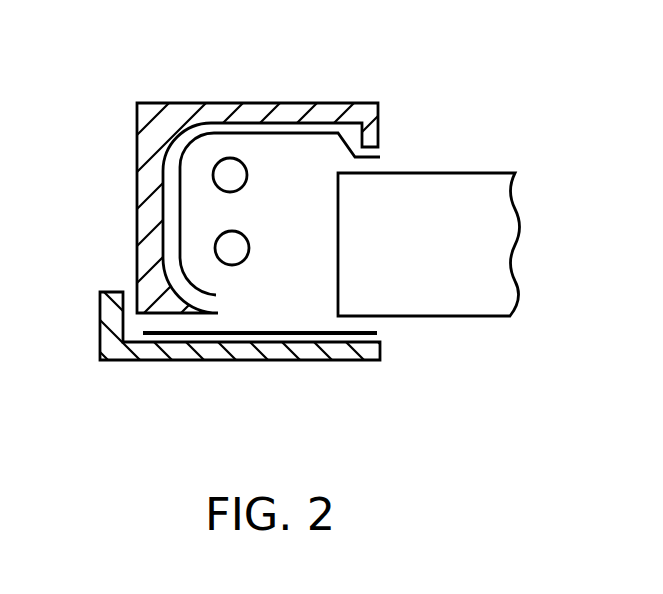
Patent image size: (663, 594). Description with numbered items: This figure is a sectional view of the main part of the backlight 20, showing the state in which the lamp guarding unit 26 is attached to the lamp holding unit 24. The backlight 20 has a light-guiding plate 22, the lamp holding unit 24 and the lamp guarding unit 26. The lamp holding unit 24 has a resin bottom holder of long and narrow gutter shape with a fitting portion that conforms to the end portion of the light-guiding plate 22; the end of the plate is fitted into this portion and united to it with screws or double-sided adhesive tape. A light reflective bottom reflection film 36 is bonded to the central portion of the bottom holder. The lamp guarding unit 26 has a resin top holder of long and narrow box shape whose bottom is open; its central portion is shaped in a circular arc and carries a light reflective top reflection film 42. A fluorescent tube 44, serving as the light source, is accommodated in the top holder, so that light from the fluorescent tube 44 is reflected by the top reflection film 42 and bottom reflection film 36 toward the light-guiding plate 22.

The backlight 20 is at (433, 93).
The light-guiding plate 22 is at (470, 173).
The lamp holding unit 24 is at (213, 370).
The lamp guarding unit 26 is at (181, 95).
The bottom reflection film 36 is at (267, 330).
The top reflection film 42 is at (289, 140).
The fluorescent tube 44 is at (237, 245).